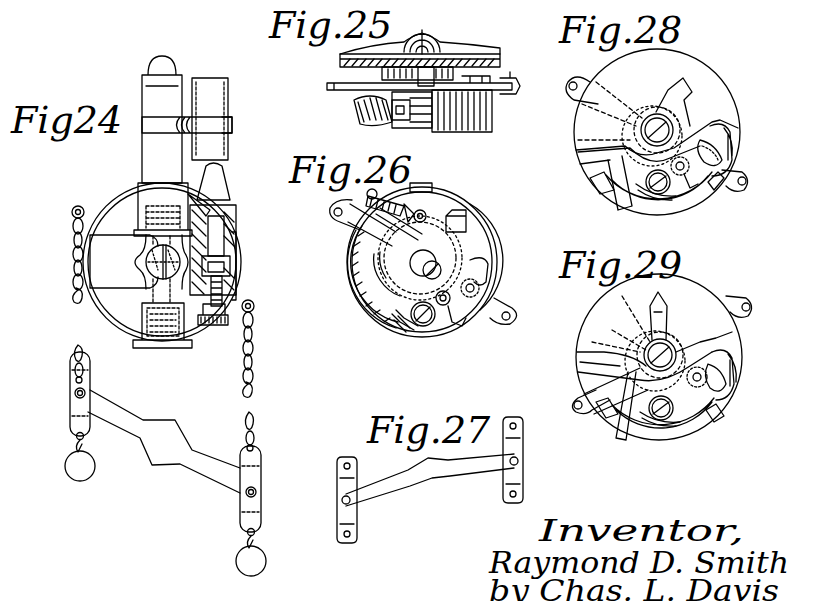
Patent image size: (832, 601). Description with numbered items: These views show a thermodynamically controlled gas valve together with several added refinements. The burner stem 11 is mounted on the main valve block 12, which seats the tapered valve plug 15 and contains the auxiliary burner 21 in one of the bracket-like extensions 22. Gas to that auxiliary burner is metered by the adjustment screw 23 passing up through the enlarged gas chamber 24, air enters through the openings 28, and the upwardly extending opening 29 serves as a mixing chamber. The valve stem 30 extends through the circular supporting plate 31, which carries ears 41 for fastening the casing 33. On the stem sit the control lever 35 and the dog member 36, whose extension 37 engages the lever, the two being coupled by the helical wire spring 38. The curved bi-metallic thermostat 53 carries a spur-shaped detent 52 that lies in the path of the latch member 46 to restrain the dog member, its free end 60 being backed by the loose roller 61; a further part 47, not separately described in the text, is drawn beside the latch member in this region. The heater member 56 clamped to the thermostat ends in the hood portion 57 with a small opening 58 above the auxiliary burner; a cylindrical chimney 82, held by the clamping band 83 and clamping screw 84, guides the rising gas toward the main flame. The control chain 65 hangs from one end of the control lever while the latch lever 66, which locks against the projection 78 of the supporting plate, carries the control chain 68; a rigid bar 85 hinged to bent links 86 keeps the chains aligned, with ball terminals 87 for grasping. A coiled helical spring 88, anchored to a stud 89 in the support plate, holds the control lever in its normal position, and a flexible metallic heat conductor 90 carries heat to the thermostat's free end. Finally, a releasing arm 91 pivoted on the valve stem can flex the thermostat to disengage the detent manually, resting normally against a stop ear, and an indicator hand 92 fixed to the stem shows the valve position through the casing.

In FIG. 24, the burner stem 11 is at (150, 92).
In FIG. 24, the main valve block 12 is at (140, 280).
In FIG. 25, the main valve block 12 is at (448, 50).
In FIG. 24, the tapered valve plug 15 is at (150, 258).
In FIG. 24, the auxiliary burner 21 is at (240, 230).
In FIG. 24, the bracket-like extensions 22 is at (232, 264).
In FIG. 25, the bracket-like extensions 22 is at (482, 67).
In FIG. 24, the adjustment screw 23 is at (224, 322).
In FIG. 24, the enlarged gas chamber 24 is at (225, 282).
In FIG. 24, the openings 28 is at (238, 245).
In FIG. 24, the upwardly extending opening 29 is at (238, 215).
In FIG. 26, the valve stem 30 is at (438, 258).
In FIG. 28, the valve stem 30 is at (612, 148).
In FIG. 29, the valve stem 30 is at (642, 355).
In FIG. 24, the circular supporting plate 31 is at (100, 214).
In FIG. 25, the circular supporting plate 31 is at (343, 64).
In FIG. 26, the circular supporting plate 31 is at (488, 224).
In FIG. 28, the circular supporting plate 31 is at (704, 198).
In FIG. 29, the circular supporting plate 31 is at (688, 422).
In FIG. 24, the casing 33 is at (112, 208).
In FIG. 28, the casing 33 is at (672, 58).
In FIG. 29, the casing 33 is at (676, 280).
In FIG. 25, the control lever 35 is at (338, 88).
In FIG. 26, the control lever 35 is at (356, 228).
In FIG. 28, the control lever 35 is at (576, 100).
In FIG. 29, the control lever 35 is at (584, 398).
In FIG. 25, the dog member 36 is at (432, 126).
In FIG. 26, the dog member 36 is at (394, 288).
In FIG. 28, the dog member 36 is at (600, 160).
In FIG. 29, the dog member 36 is at (684, 394).
In FIG. 25, the extension of dog member 37 is at (386, 115).
In FIG. 26, the extension of dog member 37 is at (424, 212).
In FIG. 25, the helical wire spring 38 is at (436, 100).
In FIG. 26, the helical wire spring 38 is at (392, 278).
In FIG. 28, the ears 41 is at (592, 188).
In FIG. 29, the ears 41 is at (604, 416).
In FIG. 26, the latch member 46 is at (446, 306).
In FIG. 28, the latch member 46 is at (690, 186).
In FIG. 29, the latch member 46 is at (720, 408).
In FIG. 26, the latch 47 is at (460, 302).
In FIG. 28, the latch 47 is at (716, 186).
In FIG. 29, the latch 47 is at (710, 372).
In FIG. 26, the spur-shaped detent 52 is at (480, 290).
In FIG. 28, the spur-shaped detent 52 is at (724, 148).
In FIG. 29, the spur-shaped detent 52 is at (724, 382).
In FIG. 26, the bi-metallic thermostat 53 is at (486, 268).
In FIG. 28, the bi-metallic thermostat 53 is at (726, 126).
In FIG. 29, the bi-metallic thermostat 53 is at (730, 344).
In FIG. 24, the heater member 56 is at (226, 200).
In FIG. 26, the heater member 56 is at (406, 200).
In FIG. 24, the hood portion 57 is at (212, 187).
In FIG. 24, the small opening 58 is at (230, 150).
In FIG. 26, the free end of thermostat 60 is at (416, 326).
In FIG. 28, the free end of thermostat 60 is at (650, 196).
In FIG. 29, the free end of thermostat 60 is at (654, 424).
In FIG. 26, the loose roller 61 is at (400, 324).
In FIG. 28, the loose roller 61 is at (662, 206).
In FIG. 29, the loose roller 61 is at (668, 432).
In FIG. 24, the control chain 65 is at (254, 364).
In FIG. 24, the latch lever 66 is at (72, 208).
In FIG. 25, the latch lever 66 is at (508, 90).
In FIG. 26, the latch lever 66 is at (514, 306).
In FIG. 28, the latch lever 66 is at (748, 176).
In FIG. 29, the latch lever 66 is at (746, 300).
In FIG. 24, the control chain 68 is at (140, 270).
In FIG. 26, the projection of supporting plate 78 is at (466, 226).
In FIG. 24, the chimney 82 is at (206, 90).
In FIG. 24, the clamping band 83 is at (224, 121).
In FIG. 24, the clamping screw 84 is at (183, 125).
In FIG. 24, the bar 85 is at (158, 448).
In FIG. 27, the bar 85 is at (430, 480).
In FIG. 24, the links 86 is at (72, 380).
In FIG. 27, the links 86 is at (336, 474).
In FIG. 24, the ball terminals 87 is at (78, 470).
In FIG. 25, the coiled helical spring 88 is at (372, 92).
In FIG. 26, the coiled helical spring 88 is at (386, 270).
In FIG. 25, the stud 89 is at (423, 34).
In FIG. 26, the stud 89 is at (428, 220).
In FIG. 25, the flexible metallic heat conductor 90 is at (400, 112).
In FIG. 26, the flexible metallic heat conductor 90 is at (396, 302).
In FIG. 28, the releasing arm 91 is at (612, 200).
In FIG. 29, the releasing arm 91 is at (620, 436).
In FIG. 28, the indicator hand 92 is at (682, 100).
In FIG. 29, the indicator hand 92 is at (656, 318).